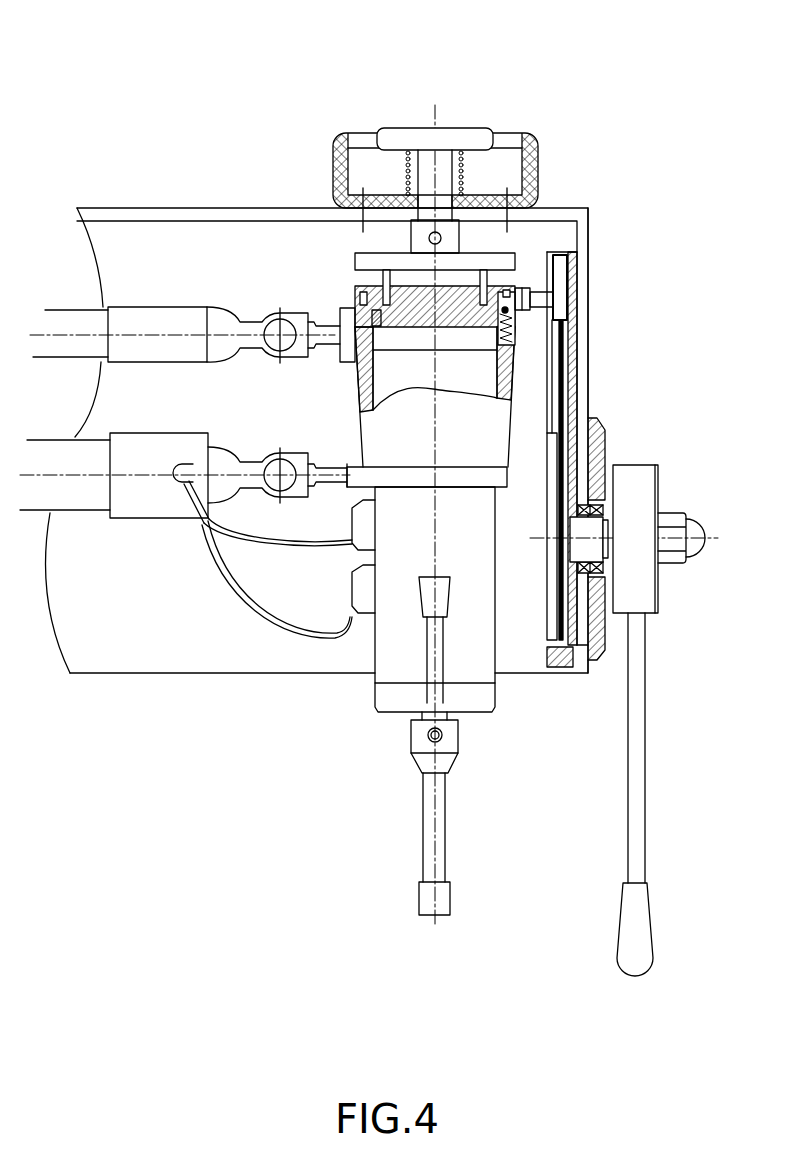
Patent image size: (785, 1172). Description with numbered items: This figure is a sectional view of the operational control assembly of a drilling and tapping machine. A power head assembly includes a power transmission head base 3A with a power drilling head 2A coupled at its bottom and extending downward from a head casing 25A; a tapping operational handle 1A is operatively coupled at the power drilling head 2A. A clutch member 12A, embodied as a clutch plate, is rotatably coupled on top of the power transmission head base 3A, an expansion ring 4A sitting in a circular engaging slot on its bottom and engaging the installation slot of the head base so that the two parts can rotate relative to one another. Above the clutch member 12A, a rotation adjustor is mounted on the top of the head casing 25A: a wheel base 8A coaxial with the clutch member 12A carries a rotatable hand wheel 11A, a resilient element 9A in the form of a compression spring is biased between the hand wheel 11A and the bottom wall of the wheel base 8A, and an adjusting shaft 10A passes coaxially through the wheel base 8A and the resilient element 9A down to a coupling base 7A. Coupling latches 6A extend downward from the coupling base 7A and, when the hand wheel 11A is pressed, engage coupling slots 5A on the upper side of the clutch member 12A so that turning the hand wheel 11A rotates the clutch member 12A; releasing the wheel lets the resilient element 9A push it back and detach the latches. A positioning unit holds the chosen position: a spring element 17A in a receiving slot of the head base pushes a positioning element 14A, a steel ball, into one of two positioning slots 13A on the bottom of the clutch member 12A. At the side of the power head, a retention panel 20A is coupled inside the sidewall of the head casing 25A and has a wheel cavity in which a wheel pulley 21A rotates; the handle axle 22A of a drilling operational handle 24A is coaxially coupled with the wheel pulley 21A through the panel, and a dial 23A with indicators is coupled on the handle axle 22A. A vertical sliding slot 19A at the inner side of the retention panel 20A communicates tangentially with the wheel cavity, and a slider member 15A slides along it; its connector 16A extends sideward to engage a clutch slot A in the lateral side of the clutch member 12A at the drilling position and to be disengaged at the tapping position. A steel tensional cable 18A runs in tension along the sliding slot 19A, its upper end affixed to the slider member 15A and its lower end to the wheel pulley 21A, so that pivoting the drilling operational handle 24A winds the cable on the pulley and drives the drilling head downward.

The tapping operational handle 1A is at (428, 647).
The power drilling head 2A is at (395, 647).
The power transmission head base 3A is at (350, 303).
The expansion ring 4A is at (362, 300).
The coupling slots 5A is at (372, 318).
The coupling latches 6A is at (375, 291).
The coupling base 7A is at (383, 268).
The wheel base 8A is at (403, 260).
The resilient element 9A is at (407, 157).
The adjusting shaft 10A is at (438, 157).
The hand wheel 11A is at (468, 135).
The clutch member 12A is at (457, 290).
The positioning slots 13A is at (504, 290).
The positioning element 14A is at (510, 284).
The clutch slot A is at (556, 246).
The slider member 15A is at (583, 253).
The connector 16A is at (562, 263).
The spring element 17A is at (545, 306).
The tensional cable 18A is at (563, 348).
The sliding slot 19A is at (560, 392).
The retention panel 20A is at (595, 420).
The wheel pulley 21A is at (566, 466).
The handle axle 22A is at (588, 530).
The dial 23A is at (658, 502).
The drilling operational handle 24A is at (640, 598).
The head casing 25A is at (582, 630).